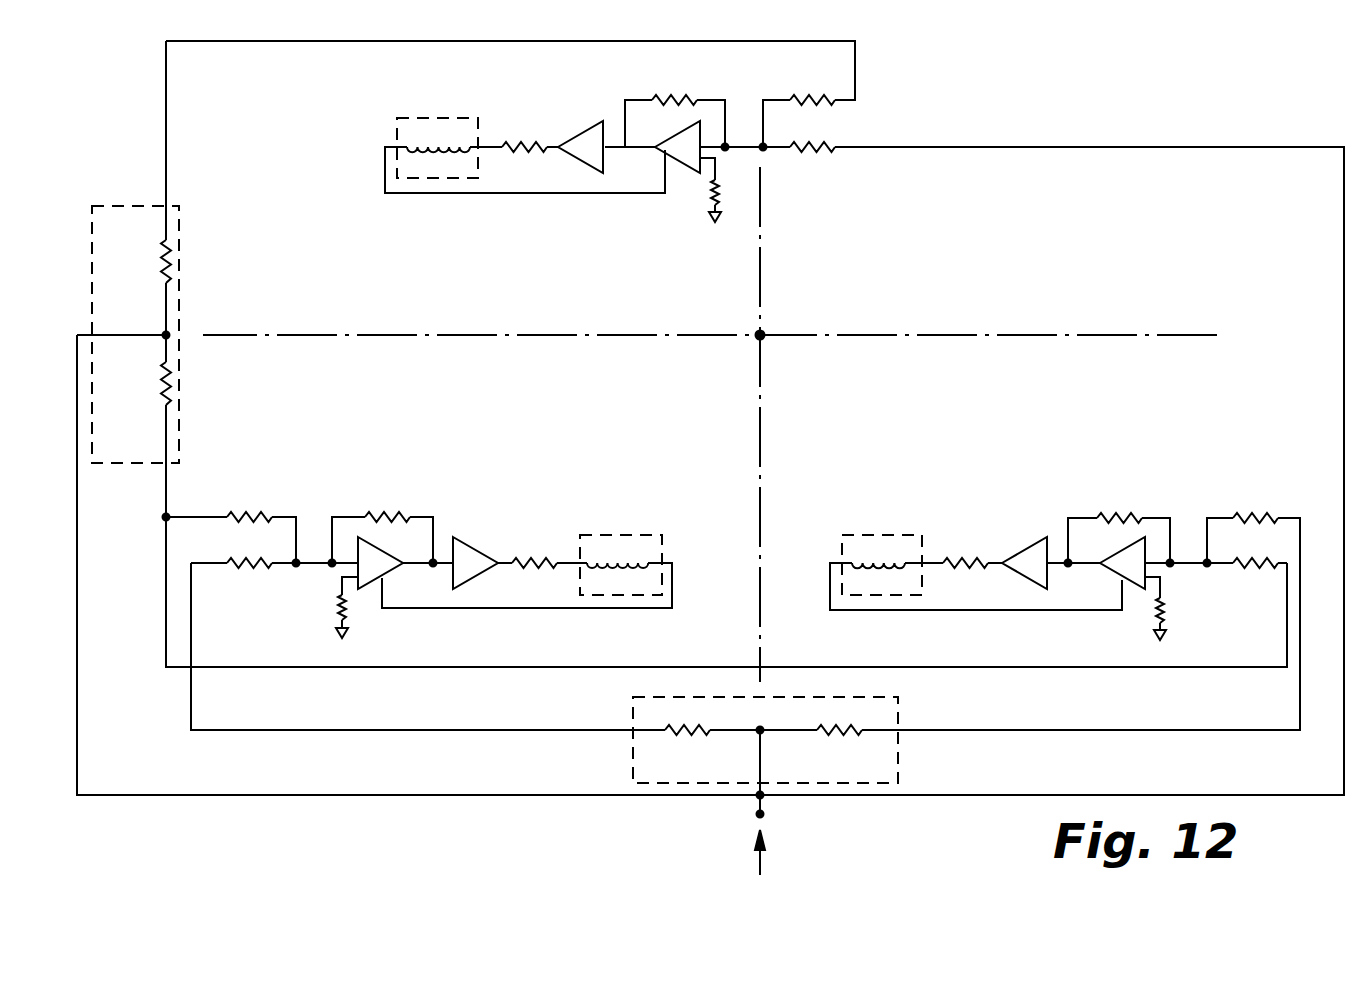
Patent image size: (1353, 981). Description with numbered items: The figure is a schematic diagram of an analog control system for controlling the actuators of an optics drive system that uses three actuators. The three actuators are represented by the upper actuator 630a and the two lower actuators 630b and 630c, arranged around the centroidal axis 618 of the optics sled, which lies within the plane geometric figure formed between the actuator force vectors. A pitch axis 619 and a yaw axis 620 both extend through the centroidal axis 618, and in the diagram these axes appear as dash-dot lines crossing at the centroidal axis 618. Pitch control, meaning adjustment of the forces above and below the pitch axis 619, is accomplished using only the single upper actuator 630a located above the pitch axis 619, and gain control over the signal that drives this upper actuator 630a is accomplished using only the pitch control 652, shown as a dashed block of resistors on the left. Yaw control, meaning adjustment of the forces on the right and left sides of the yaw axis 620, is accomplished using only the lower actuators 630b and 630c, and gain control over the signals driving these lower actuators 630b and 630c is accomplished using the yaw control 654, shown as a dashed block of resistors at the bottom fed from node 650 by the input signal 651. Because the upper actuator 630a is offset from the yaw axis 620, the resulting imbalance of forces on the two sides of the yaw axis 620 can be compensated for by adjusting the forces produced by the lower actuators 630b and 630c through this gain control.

The centroidal axis 618 is at (762, 332).
The pitch axis 619 is at (762, 226).
The yaw axis 620 is at (1030, 335).
The upper actuator 630a is at (432, 116).
The lower actuator 630b is at (896, 535).
The lower actuator 630c is at (627, 535).
The input node 650 is at (763, 814).
The input signal 651 is at (760, 857).
The pitch control 652 is at (117, 206).
The yaw control 654 is at (898, 700).